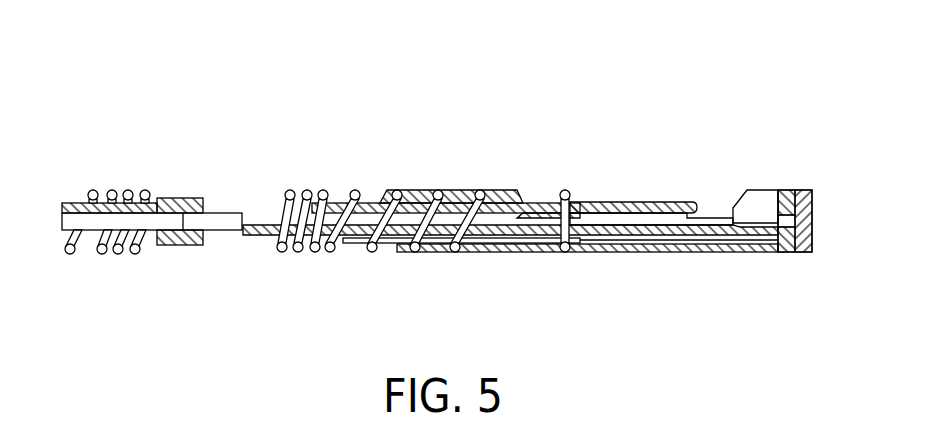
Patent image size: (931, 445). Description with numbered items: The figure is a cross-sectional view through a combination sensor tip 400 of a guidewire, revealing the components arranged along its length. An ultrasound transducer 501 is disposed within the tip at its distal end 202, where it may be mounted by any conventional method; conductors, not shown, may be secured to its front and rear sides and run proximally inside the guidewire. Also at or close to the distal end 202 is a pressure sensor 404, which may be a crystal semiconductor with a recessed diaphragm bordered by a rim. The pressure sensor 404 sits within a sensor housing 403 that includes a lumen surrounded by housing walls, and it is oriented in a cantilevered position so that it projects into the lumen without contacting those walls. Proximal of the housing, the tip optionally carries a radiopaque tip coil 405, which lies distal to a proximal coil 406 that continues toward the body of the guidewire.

The combination sensor tip 400 is at (142, 64).
The sensor housing 403 is at (618, 252).
The pressure sensor 404 is at (615, 202).
The radiopaque tip coil 405 is at (290, 192).
The proximal coil 406 is at (130, 190).
The ultrasound transducer 501 is at (782, 208).
The distal end 202 is at (807, 198).